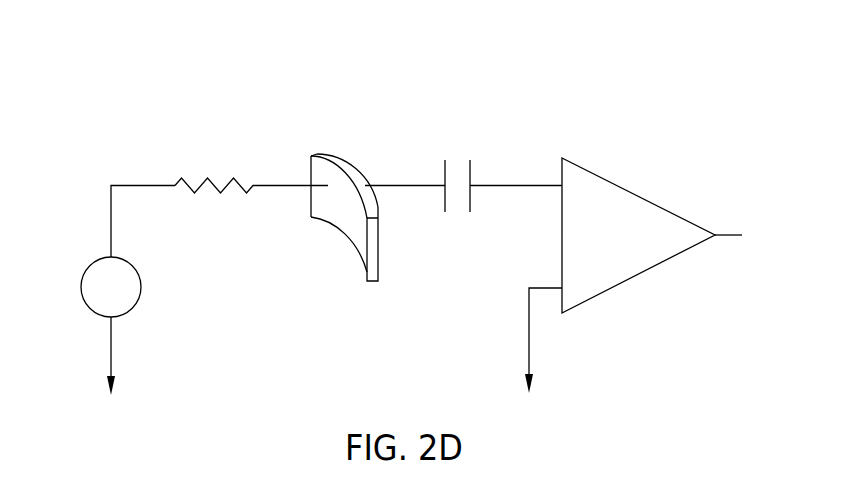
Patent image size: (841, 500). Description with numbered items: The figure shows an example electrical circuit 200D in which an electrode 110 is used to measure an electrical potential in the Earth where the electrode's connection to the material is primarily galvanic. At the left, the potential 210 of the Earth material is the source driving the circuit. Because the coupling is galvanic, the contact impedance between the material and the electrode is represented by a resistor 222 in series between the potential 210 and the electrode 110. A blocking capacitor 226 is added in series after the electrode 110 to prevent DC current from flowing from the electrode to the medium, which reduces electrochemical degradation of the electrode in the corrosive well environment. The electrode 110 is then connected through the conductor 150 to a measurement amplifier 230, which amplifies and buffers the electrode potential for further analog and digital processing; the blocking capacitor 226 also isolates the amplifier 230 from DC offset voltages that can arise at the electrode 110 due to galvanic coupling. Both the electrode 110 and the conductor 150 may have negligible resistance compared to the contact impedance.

The electrical circuit 200D is at (160, 45).
The potential 210 is at (86, 268).
The resistor 222 is at (208, 177).
The electrode 110 is at (350, 167).
The blocking capacitor 226 is at (457, 158).
The conductor 150 is at (513, 183).
The measurement amplifier 230 is at (632, 210).